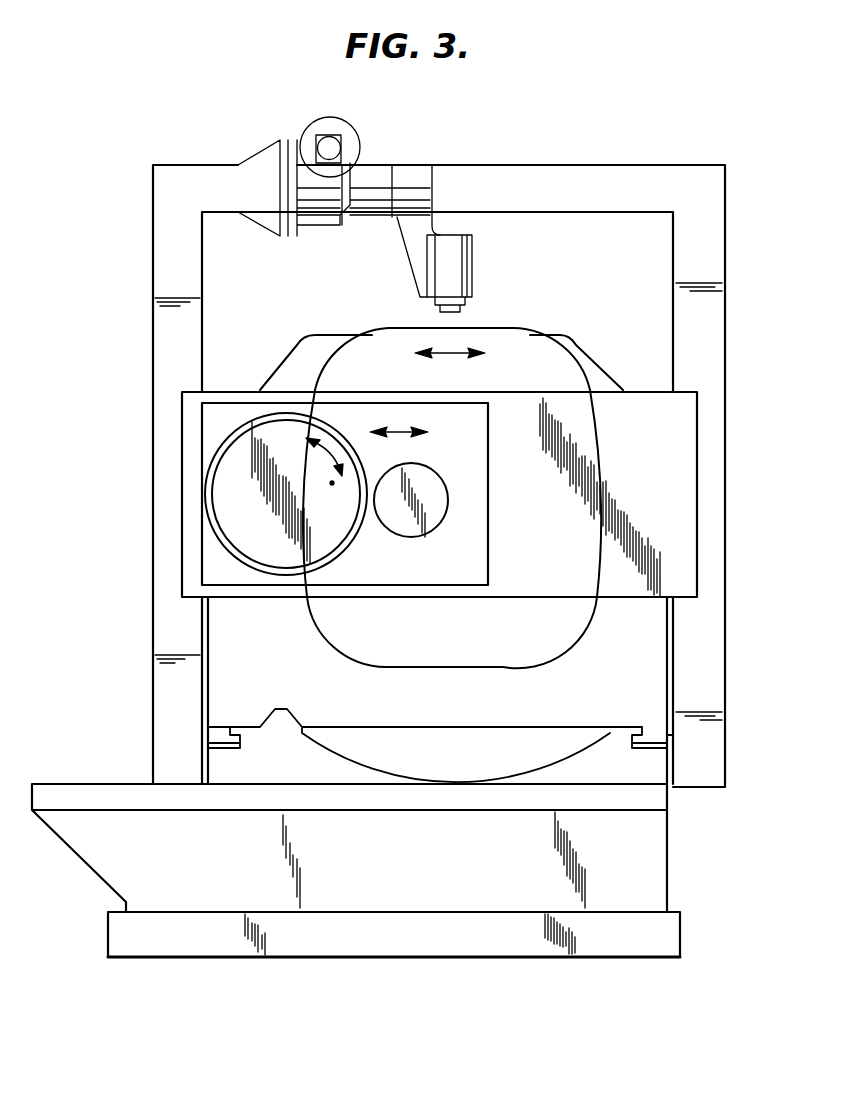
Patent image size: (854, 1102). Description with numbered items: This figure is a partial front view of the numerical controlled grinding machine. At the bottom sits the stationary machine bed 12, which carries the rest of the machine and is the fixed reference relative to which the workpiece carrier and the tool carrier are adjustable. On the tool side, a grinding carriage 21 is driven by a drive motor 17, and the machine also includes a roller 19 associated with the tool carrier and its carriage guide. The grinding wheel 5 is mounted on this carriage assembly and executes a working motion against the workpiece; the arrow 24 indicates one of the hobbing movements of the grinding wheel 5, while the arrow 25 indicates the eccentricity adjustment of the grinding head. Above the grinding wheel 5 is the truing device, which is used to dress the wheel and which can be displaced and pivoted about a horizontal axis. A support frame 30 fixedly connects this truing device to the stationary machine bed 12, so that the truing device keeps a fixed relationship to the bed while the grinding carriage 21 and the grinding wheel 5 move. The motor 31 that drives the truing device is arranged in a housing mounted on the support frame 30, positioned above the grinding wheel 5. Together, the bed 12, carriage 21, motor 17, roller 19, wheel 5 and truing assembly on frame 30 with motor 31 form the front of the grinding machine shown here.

The grinding wheel 5 is at (238, 533).
The stationary machine bed 12 is at (468, 871).
The drive motor 17 is at (435, 487).
The roller 19 is at (543, 363).
The grinding carriage 21 is at (218, 413).
The arrow indicating hobbing movement 24 is at (442, 354).
The arrow indicating eccentricity adjustment 25 is at (402, 428).
The support frame 30 is at (718, 322).
The motor for driving the truing device 31 is at (472, 242).